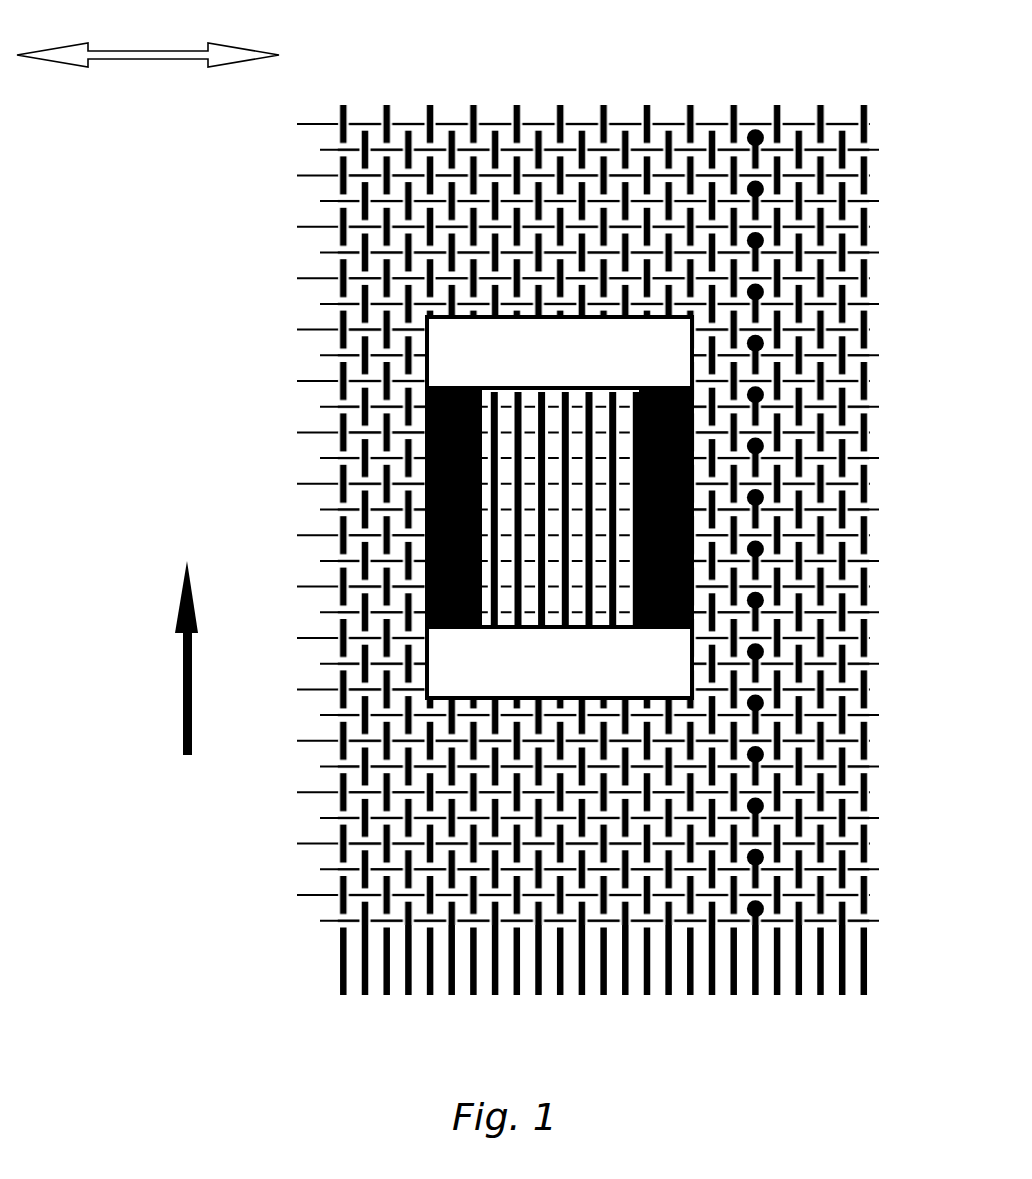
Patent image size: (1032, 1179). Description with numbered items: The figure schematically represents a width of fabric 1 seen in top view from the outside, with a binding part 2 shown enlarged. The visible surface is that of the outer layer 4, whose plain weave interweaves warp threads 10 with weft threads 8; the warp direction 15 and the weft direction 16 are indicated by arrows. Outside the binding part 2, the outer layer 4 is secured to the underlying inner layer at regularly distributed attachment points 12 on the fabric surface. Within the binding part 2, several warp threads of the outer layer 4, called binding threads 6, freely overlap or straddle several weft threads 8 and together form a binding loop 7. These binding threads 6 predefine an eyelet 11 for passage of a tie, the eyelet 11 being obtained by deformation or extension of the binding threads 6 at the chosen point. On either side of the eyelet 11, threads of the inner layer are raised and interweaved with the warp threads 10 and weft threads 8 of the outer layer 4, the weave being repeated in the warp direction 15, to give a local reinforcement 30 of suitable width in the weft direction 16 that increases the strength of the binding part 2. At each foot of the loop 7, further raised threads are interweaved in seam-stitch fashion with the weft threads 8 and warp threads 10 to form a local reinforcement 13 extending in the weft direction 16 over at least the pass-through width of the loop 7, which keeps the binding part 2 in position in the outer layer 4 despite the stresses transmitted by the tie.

The fabric 1 is at (551, 550).
The binding part 2 is at (420, 530).
The outer layer 4 is at (604, 514).
The binding threads 6 is at (483, 463).
The binding loop 7 is at (513, 414).
The weft threads 8 is at (443, 842).
The warp threads 10 is at (822, 575).
The eyelet 11 is at (528, 603).
The attachment points 12 is at (763, 752).
The local reinforcement 13 is at (443, 337).
The warp direction 15 is at (183, 676).
The weft direction 16 is at (137, 55).
The local reinforcement 30 is at (483, 488).